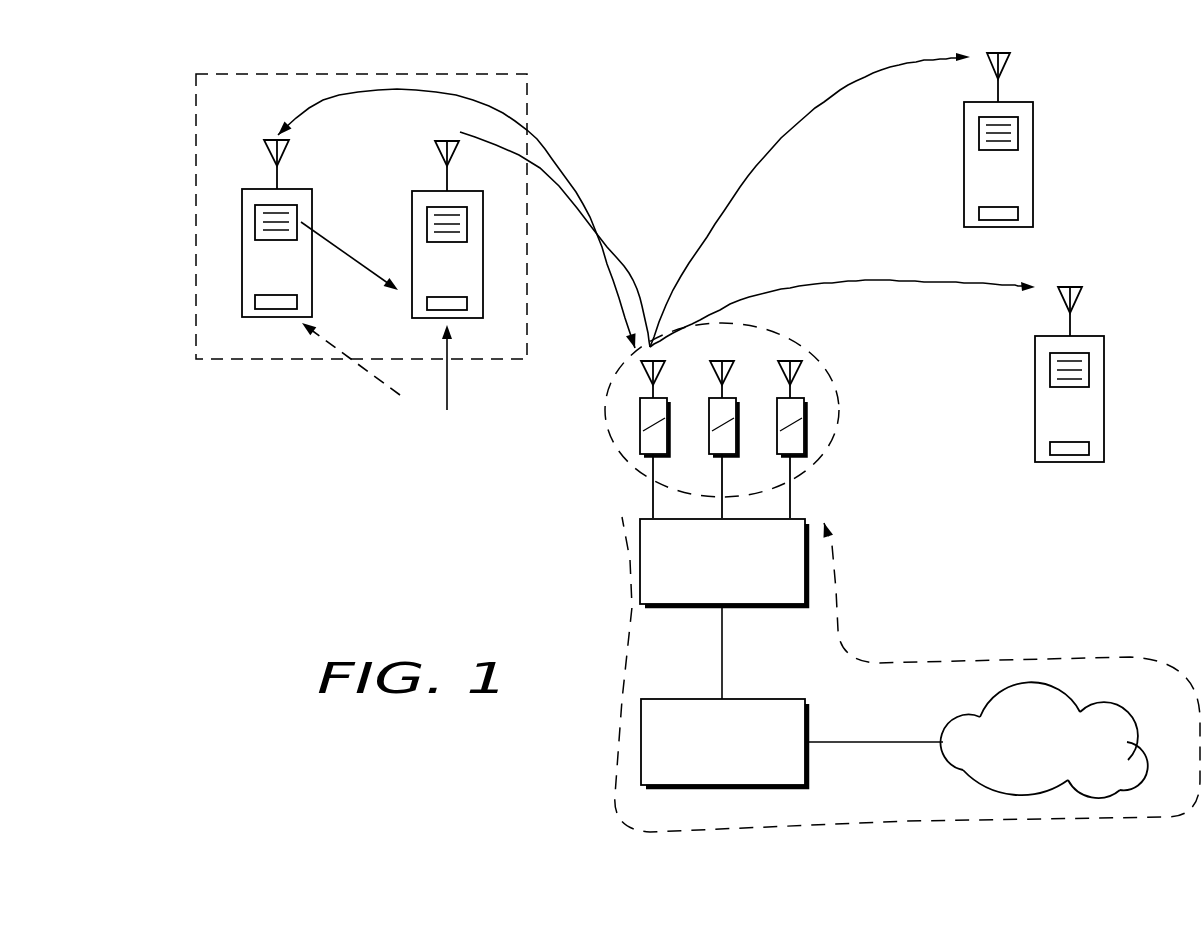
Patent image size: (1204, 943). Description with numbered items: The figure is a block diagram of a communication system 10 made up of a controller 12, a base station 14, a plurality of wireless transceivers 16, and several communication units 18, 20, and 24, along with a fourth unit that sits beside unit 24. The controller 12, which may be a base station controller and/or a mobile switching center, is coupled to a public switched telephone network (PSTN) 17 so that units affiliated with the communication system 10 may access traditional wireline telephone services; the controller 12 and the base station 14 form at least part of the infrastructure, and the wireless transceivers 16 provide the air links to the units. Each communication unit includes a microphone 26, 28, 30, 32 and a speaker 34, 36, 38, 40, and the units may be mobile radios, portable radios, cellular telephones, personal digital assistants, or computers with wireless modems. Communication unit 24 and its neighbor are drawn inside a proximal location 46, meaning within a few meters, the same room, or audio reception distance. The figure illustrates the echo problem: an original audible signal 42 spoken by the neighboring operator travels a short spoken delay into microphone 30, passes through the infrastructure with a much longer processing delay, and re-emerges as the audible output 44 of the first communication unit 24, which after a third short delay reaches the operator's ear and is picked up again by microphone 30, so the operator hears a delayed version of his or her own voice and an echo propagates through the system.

The communication system 10 is at (418, 566).
The controller 12 is at (788, 787).
The base station 14 is at (788, 607).
The wireless transceivers 16 is at (817, 460).
The public switched telephone network (PSTN) 17 is at (958, 723).
The communication unit 18 is at (985, 227).
The communication unit 20 is at (1047, 462).
The communication unit 24 is at (242, 243).
The microphone 26 is at (1018, 212).
The microphone 28 is at (1089, 450).
The microphone 30 is at (467, 304).
The microphone 32 is at (297, 303).
The speaker 34 is at (1018, 133).
The speaker 36 is at (1089, 370).
The speaker 38 is at (467, 225).
The speaker 40 is at (297, 210).
The original audible signal 42 is at (447, 393).
The audible output 44 is at (340, 250).
The proximal location 46 is at (195, 308).